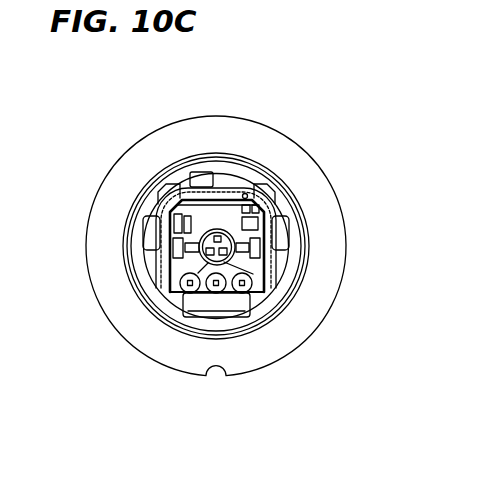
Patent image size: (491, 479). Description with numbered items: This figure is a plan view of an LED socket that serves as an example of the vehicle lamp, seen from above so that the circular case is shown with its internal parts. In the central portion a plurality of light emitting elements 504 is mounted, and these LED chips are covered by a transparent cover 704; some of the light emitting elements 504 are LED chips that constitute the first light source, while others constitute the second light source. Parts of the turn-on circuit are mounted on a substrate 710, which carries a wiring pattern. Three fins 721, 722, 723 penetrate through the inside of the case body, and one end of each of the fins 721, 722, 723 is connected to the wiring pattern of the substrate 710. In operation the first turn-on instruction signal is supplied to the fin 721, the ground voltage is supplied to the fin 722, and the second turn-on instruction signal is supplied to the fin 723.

The light emitting elements 504 is at (215, 229).
The transparent cover 704 is at (222, 228).
The substrate 710 is at (212, 228).
The fin 721 is at (246, 292).
The fin 722 is at (226, 290).
The fin 723 is at (185, 284).